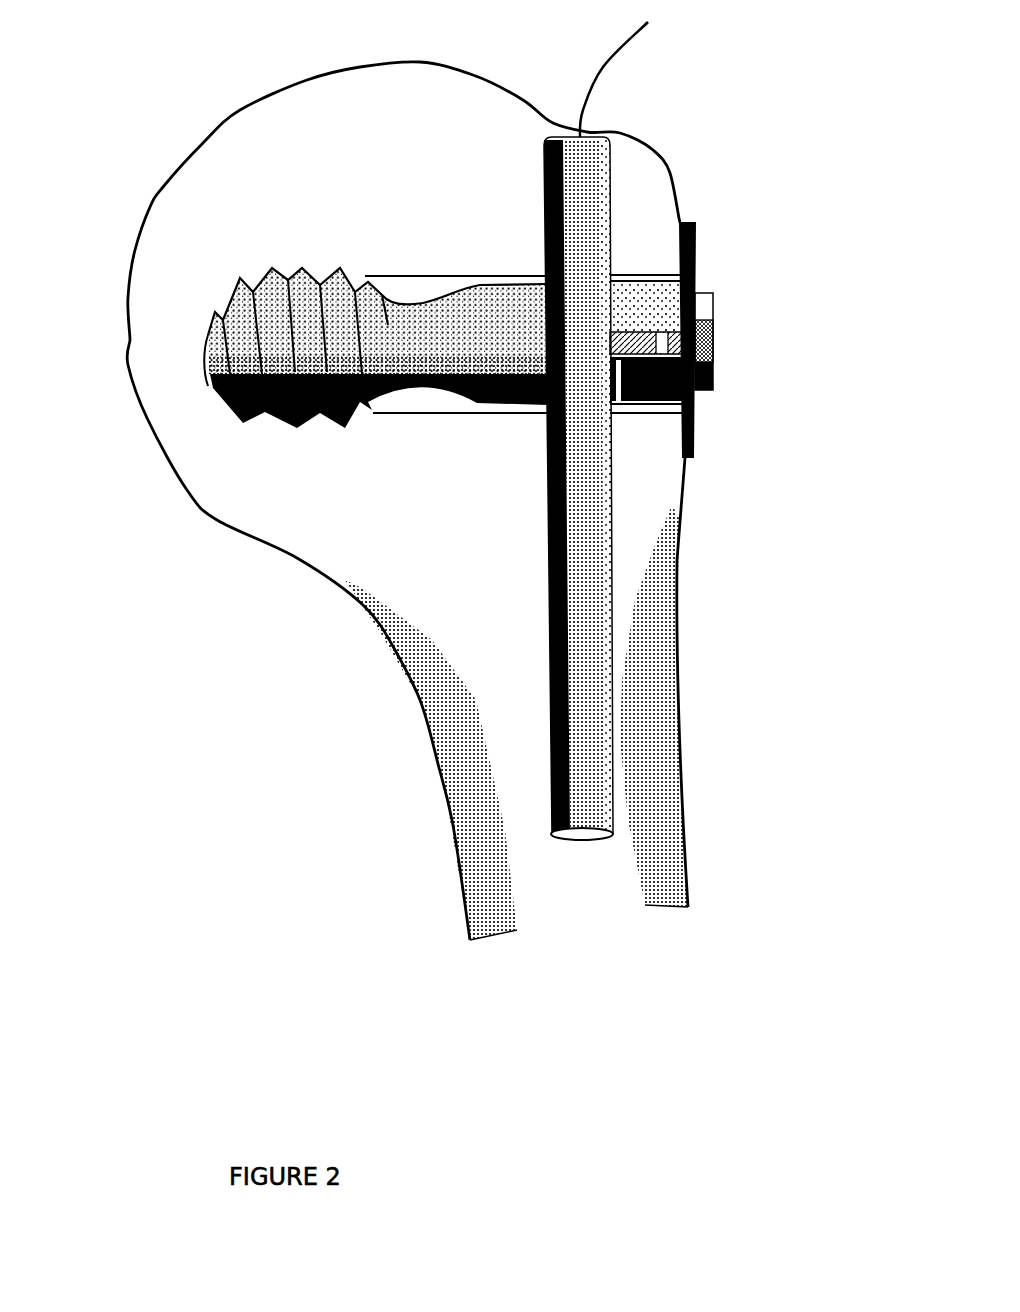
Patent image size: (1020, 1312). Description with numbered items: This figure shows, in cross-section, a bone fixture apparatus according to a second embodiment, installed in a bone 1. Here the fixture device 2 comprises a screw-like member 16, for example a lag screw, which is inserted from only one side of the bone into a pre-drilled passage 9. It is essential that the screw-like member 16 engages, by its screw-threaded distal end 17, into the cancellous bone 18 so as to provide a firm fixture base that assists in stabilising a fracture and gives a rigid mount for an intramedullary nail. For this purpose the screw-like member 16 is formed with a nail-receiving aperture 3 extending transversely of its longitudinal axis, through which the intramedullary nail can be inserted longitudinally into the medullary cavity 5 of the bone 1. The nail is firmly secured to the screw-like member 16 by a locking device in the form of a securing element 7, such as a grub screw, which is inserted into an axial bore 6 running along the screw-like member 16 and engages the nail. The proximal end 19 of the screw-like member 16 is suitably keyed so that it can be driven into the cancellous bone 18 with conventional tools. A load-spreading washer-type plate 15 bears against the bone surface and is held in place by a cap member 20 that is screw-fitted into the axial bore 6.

The bone 1 is at (477, 797).
The fixture device 2 is at (479, 421).
The nail-receiving aperture 3 is at (502, 405).
The medullary cavity 5 is at (620, 577).
The axial bore 6 is at (713, 297).
The securing element 7 is at (683, 470).
The pre-drilled passage 9 is at (648, 272).
The load-spreading washer-type plate 15 is at (697, 285).
The screw-like member 16 is at (418, 385).
The screw-threaded distal end 17 is at (273, 420).
The cancellous bone 18 is at (220, 395).
The proximal end 19 is at (715, 380).
The cap member 20 is at (713, 343).